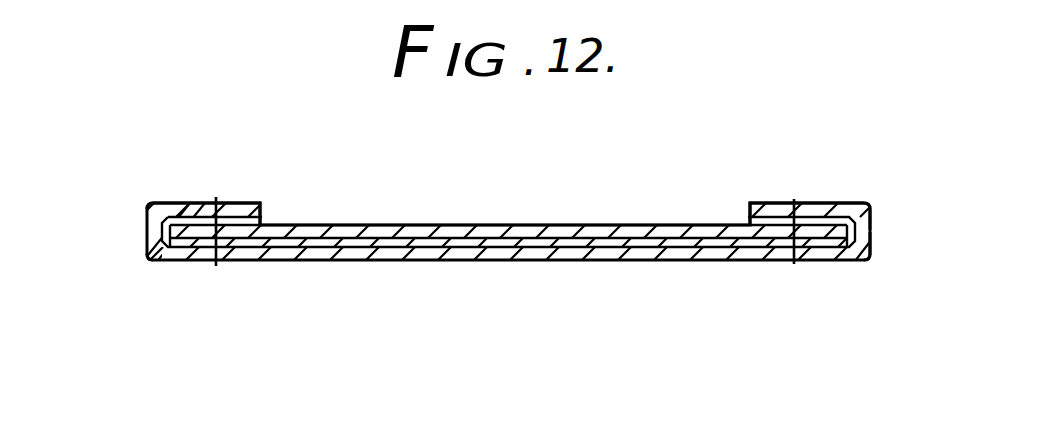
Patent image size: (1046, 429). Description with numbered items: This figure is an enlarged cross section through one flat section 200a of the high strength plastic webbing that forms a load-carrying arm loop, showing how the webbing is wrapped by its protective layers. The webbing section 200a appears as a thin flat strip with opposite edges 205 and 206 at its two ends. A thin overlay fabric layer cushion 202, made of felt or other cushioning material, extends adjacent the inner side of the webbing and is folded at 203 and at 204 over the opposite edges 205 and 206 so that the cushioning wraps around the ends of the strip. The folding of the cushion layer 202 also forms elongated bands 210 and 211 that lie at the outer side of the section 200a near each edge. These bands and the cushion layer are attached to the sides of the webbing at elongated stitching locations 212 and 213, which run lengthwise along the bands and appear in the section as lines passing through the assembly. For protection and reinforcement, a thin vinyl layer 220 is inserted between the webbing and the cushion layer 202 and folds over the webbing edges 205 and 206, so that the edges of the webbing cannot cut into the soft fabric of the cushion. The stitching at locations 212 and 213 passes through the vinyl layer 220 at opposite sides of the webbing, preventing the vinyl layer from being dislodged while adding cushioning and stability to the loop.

The parallel flat section of webbing 200a is at (537, 225).
The overlay fabric layer cushion 202 is at (612, 264).
The fold of cushion layer 203 is at (147, 238).
The fold of cushion layer 204 is at (873, 238).
The webbing edge 205 is at (147, 230).
The webbing edge 206 is at (872, 229).
The elongated band 210 is at (230, 205).
The elongated band 211 is at (827, 203).
The elongated stitching location 212 is at (210, 225).
The elongated stitching location 213 is at (782, 238).
The vinyl layer 220 is at (250, 203).